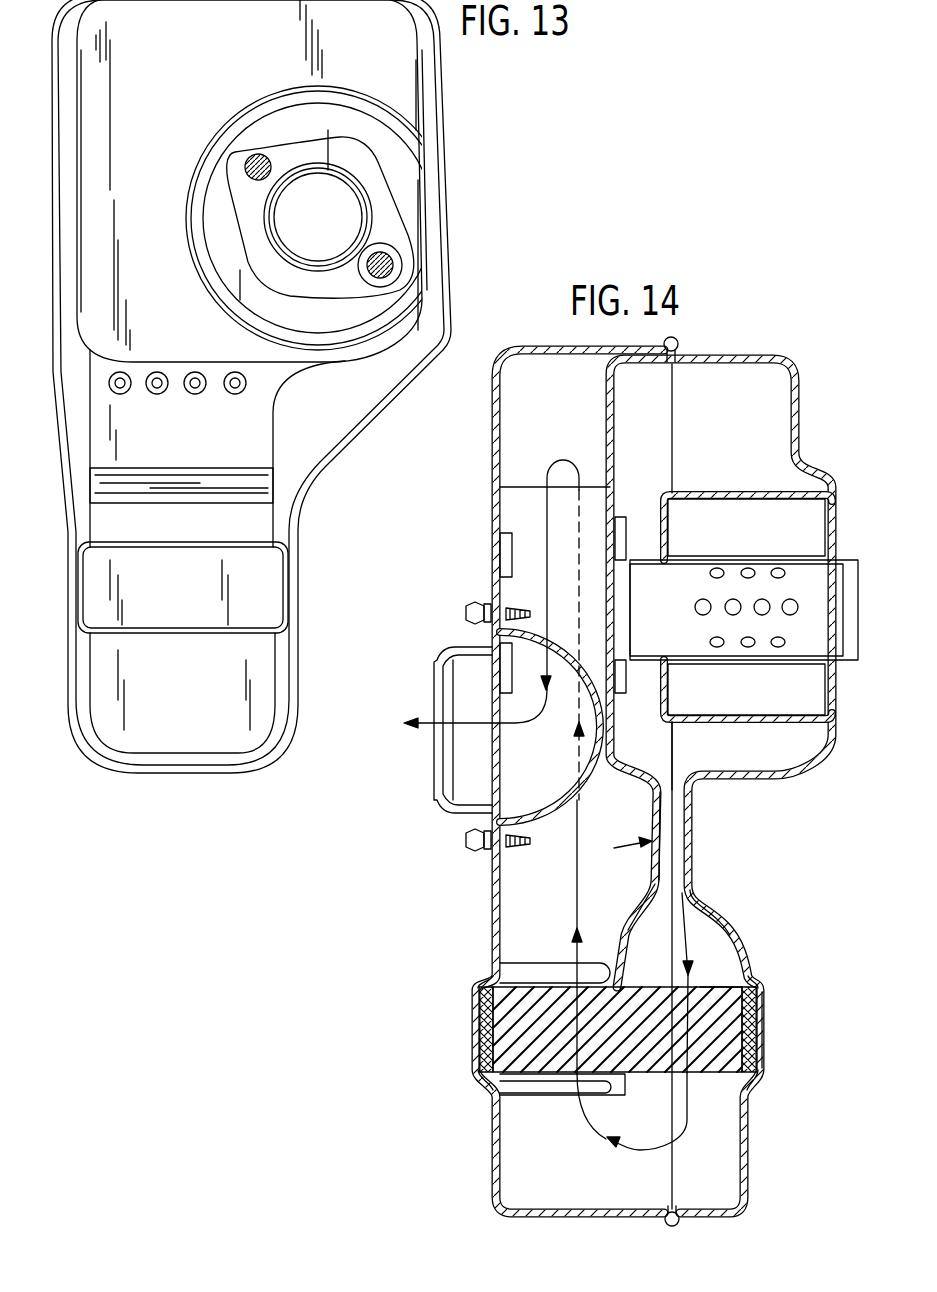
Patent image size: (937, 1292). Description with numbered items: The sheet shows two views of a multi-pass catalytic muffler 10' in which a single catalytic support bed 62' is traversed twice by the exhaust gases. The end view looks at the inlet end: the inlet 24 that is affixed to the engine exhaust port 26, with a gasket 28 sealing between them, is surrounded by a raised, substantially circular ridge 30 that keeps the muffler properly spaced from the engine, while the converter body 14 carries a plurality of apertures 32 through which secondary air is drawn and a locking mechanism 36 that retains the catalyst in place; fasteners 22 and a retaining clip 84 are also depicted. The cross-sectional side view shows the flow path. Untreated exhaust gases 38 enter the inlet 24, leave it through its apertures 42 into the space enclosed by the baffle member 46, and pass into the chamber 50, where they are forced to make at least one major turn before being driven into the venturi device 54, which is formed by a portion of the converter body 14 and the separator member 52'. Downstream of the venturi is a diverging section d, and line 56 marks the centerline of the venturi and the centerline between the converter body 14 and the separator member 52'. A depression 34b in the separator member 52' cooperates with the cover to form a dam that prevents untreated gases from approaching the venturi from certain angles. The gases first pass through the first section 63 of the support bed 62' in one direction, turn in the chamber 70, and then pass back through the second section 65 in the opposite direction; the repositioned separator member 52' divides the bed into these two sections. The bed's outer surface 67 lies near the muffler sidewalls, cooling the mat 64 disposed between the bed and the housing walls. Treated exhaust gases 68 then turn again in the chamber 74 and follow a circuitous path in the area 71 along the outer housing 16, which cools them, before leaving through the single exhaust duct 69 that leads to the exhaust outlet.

In FIG. 14, the catalytic muffler 10' is at (773, 413).
In FIG. 14, the converter body 14 is at (795, 413).
In FIG. 14, the outer housing 16 is at (494, 424).
In FIG. 13, the fastener screw 22 is at (370, 260).
In FIG. 13, the inlet 24 is at (283, 195).
In FIG. 14, the inlet 24 is at (748, 556).
In FIG. 14, the exhaust port 26 is at (855, 580).
In FIG. 13, the gasket 28 is at (293, 150).
In FIG. 13, the raised substantially circular ridge 30 is at (238, 124).
In FIG. 13, the apertures 32 is at (126, 392).
In FIG. 14, the apertures 32 is at (683, 783).
In FIG. 14, the depression 34b is at (665, 807).
In FIG. 13, the locking mechanism 36 is at (250, 600).
In FIG. 14, the untreated exhaust gases 38 is at (690, 925).
In FIG. 14, the apertures 42 is at (792, 603).
In FIG. 14, the baffle member 46 is at (710, 492).
In FIG. 14, the chamber 50 is at (741, 424).
In FIG. 14, the separator member 52' is at (623, 905).
In FIG. 14, the venturi device 54 is at (618, 848).
In FIG. 14, the centerline 56 is at (673, 1150).
In FIG. 14, the single catalytic support bed 62' is at (671, 1034).
In FIG. 14, the first section 63 is at (721, 983).
In FIG. 14, the mat 64 is at (768, 993).
In FIG. 14, the second section 65 is at (515, 1037).
In FIG. 14, the outer surface 67 is at (762, 1018).
In FIG. 14, the treated exhaust gases 68 is at (475, 723).
In FIG. 14, the exhaust duct 69 is at (525, 516).
In FIG. 14, the chamber 70 is at (561, 1190).
In FIG. 14, the area 71 is at (545, 432).
In FIG. 14, the chamber 74 is at (549, 937).
In FIG. 14, the clip 84 is at (680, 336).
In FIG. 14, the diverging section d is at (682, 893).